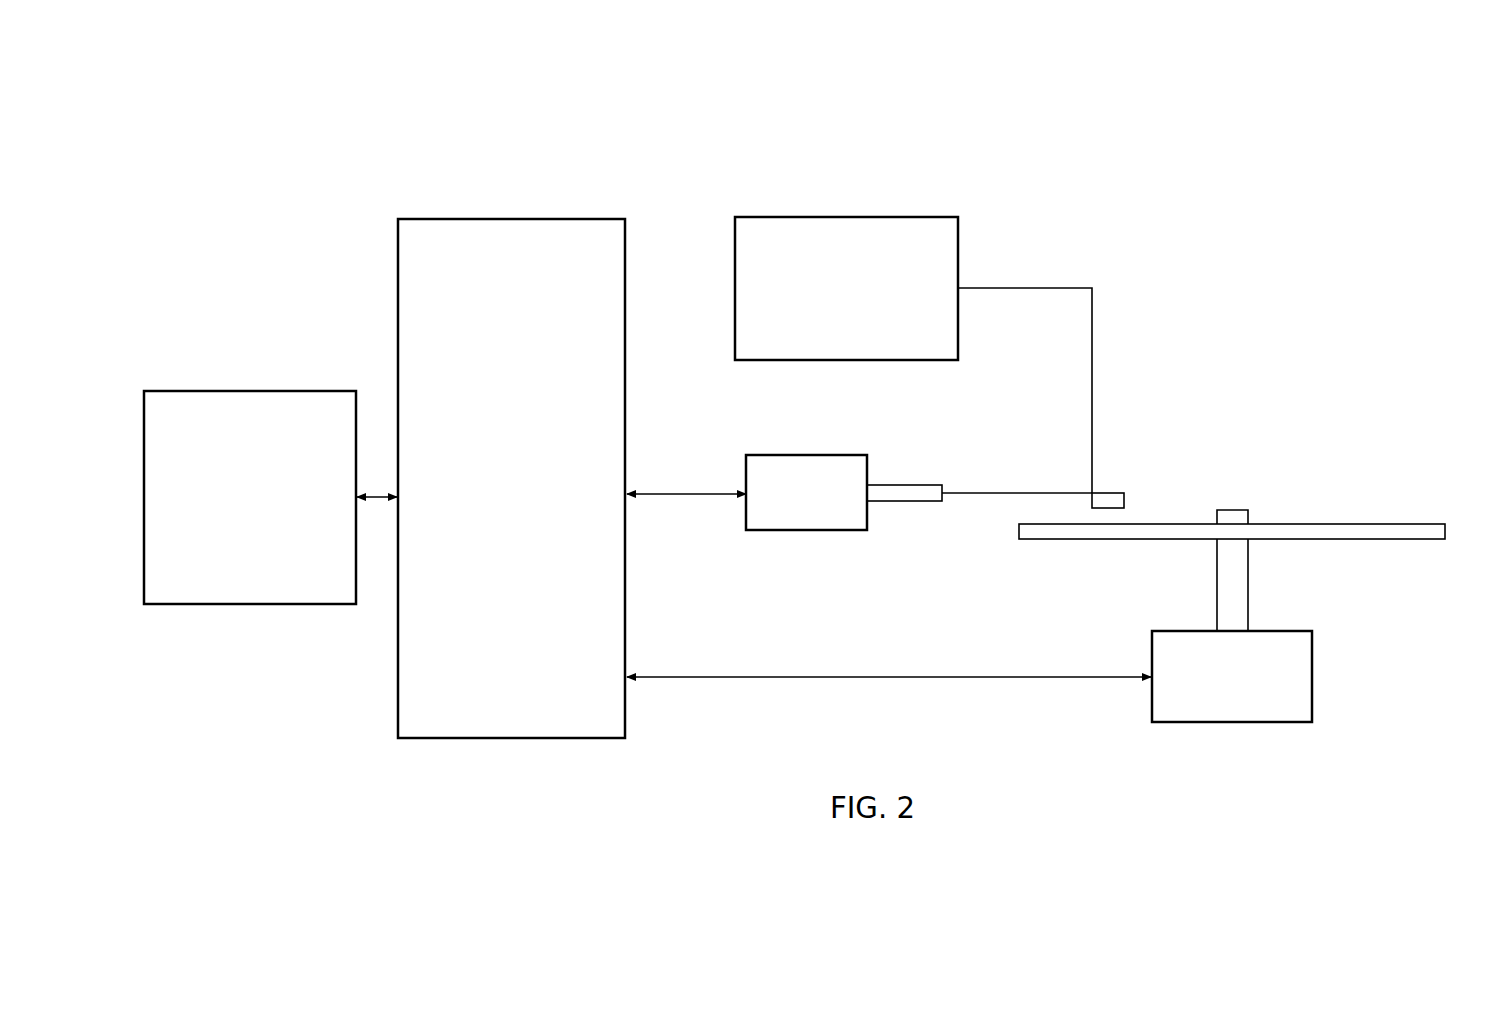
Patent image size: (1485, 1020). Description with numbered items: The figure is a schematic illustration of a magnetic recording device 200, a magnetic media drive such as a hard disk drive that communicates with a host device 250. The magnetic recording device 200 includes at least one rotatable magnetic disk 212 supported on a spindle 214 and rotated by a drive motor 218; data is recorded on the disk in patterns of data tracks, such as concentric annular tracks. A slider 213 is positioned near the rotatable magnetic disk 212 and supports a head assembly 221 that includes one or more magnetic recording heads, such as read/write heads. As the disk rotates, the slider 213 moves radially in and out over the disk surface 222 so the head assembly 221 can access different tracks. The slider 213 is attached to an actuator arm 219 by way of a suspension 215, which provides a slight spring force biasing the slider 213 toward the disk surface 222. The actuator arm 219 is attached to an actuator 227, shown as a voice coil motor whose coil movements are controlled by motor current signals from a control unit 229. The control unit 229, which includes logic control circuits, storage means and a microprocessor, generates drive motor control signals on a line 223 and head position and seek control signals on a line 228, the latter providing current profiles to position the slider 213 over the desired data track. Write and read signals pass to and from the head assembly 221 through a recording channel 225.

The magnetic recording device 200 is at (228, 86).
The host device 250 is at (266, 521).
The control unit 229 is at (455, 217).
The recording channel 225 is at (780, 218).
The line 228 is at (677, 490).
The actuator 227 is at (808, 455).
The actuator arm 219 is at (908, 484).
The suspension 215 is at (1010, 491).
The slider 213 is at (1107, 491).
The head assembly 221 is at (1126, 500).
The disk surface 222 is at (1353, 523).
The rotatable magnetic disk 212 is at (1124, 558).
The spindle 214 is at (1249, 595).
The drive motor 218 is at (1313, 682).
The line 223 is at (840, 680).